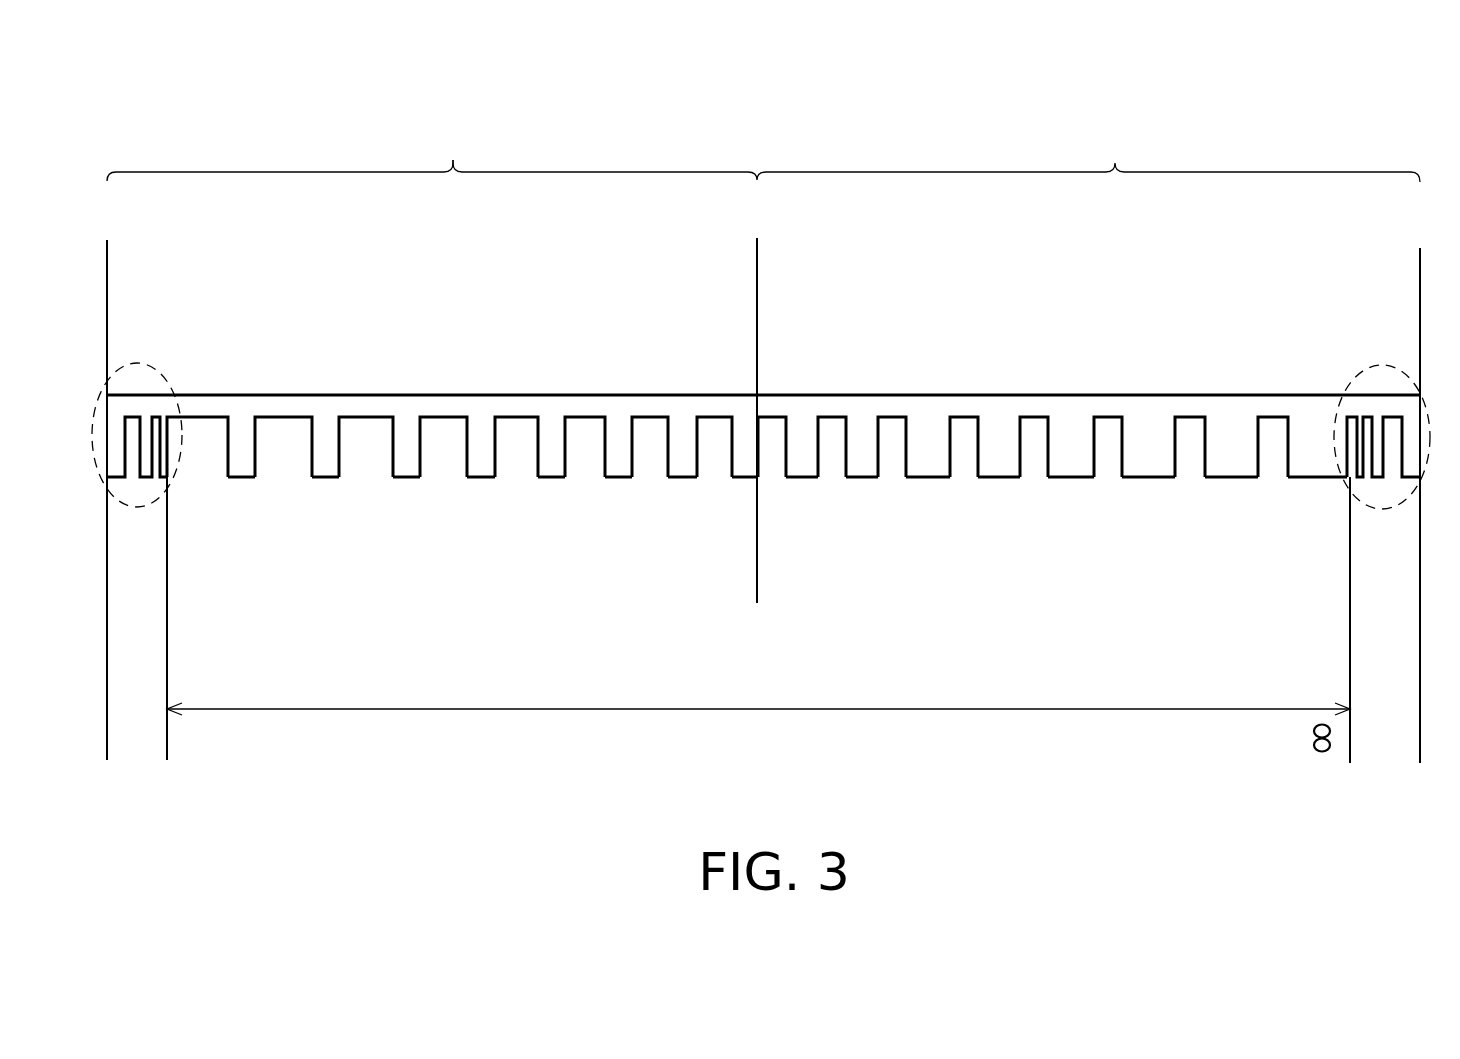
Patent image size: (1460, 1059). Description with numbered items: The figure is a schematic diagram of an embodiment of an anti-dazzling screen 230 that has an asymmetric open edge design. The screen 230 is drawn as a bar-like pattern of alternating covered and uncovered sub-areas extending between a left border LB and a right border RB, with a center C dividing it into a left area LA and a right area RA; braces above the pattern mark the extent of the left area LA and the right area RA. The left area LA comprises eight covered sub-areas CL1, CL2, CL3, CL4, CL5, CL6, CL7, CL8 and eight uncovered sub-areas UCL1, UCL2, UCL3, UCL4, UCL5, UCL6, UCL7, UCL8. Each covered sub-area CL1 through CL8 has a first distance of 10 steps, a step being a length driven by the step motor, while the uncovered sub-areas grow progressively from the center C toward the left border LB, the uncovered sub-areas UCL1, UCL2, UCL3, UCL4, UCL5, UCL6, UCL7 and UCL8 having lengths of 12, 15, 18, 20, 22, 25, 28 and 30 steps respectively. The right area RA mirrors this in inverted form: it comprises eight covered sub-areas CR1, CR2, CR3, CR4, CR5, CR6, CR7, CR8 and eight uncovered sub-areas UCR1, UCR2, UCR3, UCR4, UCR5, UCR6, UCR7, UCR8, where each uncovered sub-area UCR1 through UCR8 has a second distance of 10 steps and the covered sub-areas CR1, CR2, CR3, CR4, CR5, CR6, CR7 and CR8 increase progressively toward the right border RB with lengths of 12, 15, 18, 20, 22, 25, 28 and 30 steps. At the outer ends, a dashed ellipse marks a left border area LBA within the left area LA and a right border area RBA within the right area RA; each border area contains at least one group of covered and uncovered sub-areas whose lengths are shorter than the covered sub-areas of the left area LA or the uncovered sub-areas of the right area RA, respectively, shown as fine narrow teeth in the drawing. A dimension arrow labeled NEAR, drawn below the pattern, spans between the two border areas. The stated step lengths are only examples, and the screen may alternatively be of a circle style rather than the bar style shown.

The anti-dazzling screen 230 is at (614, 101).
The first and second distance 10 is at (757, 464).
The sub-area length of twelve steps 12 is at (758, 464).
The sub-area length of fifteen steps 15 is at (755, 464).
The sub-area length of eighteen steps 18 is at (757, 464).
The sub-area length of twenty steps 20 is at (757, 464).
The sub-area length of twenty-two steps 22 is at (757, 464).
The sub-area length of twenty-five steps 25 is at (757, 464).
The sub-area length of twenty-eight steps 28 is at (756, 464).
The sub-area length of thirty steps 30 is at (757, 464).
The left border LB is at (114, 482).
The right border RB is at (1426, 484).
The center C is at (755, 404).
The left area LA is at (291, 147).
The right area RA is at (936, 148).
The left border area LBA is at (138, 358).
The right border area RBA is at (1385, 357).
The near region NEAR is at (758, 620).
The uncovered sub-area UCL1 is at (714, 417).
The uncovered sub-area UCL2 is at (650, 417).
The uncovered sub-area UCL3 is at (586, 417).
The uncovered sub-area UCL4 is at (516, 417).
The uncovered sub-area UCL5 is at (443, 417).
The uncovered sub-area UCL6 is at (367, 417).
The uncovered sub-area UCL7 is at (284, 417).
The uncovered sub-area UCL8 is at (198, 417).
The uncovered sub-area UCR1 is at (771, 417).
The uncovered sub-area UCR2 is at (831, 417).
The uncovered sub-area UCR3 is at (892, 417).
The uncovered sub-area UCR4 is at (964, 417).
The uncovered sub-area UCR5 is at (1034, 417).
The uncovered sub-area UCR6 is at (1109, 417).
The uncovered sub-area UCR7 is at (1189, 417).
The uncovered sub-area UCR8 is at (1273, 417).
The covered sub-area CL1 is at (732, 480).
The covered sub-area CL2 is at (668, 480).
The covered sub-area CL3 is at (605, 480).
The covered sub-area CL4 is at (538, 480).
The covered sub-area CL5 is at (467, 480).
The covered sub-area CL6 is at (393, 480).
The covered sub-area CL7 is at (312, 480).
The covered sub-area CL8 is at (228, 480).
The covered sub-area CR1 is at (818, 480).
The covered sub-area CR2 is at (878, 480).
The covered sub-area CR3 is at (950, 480).
The covered sub-area CR4 is at (1020, 480).
The covered sub-area CR5 is at (1094, 480).
The covered sub-area CR6 is at (1175, 480).
The covered sub-area CR7 is at (1258, 480).
The covered sub-area CR8 is at (1347, 480).